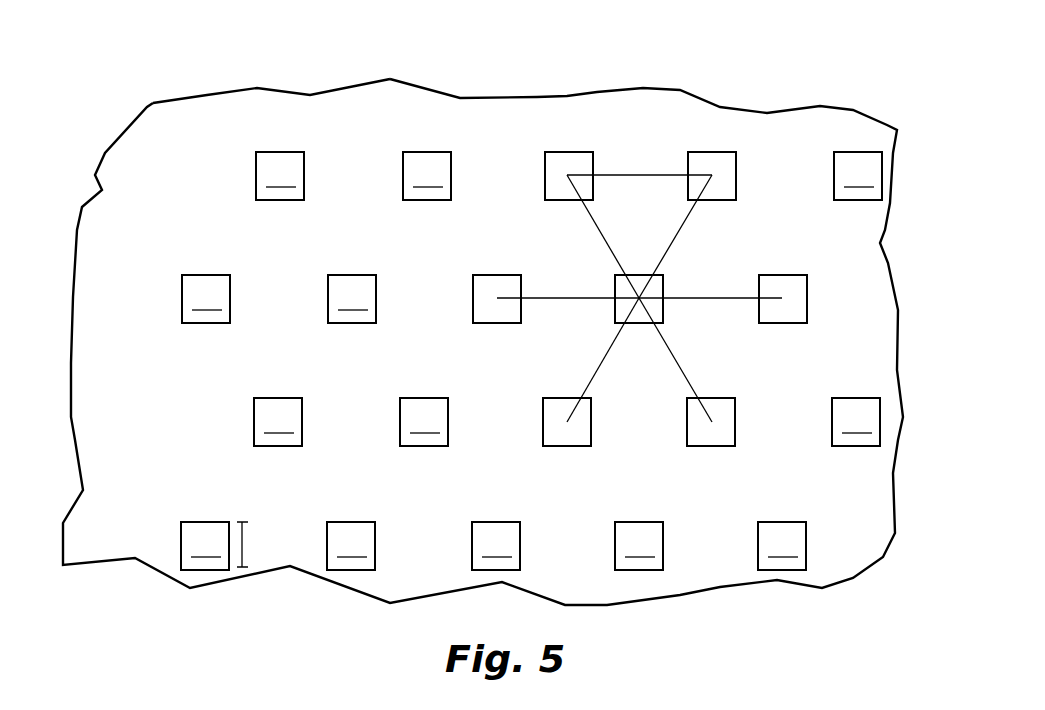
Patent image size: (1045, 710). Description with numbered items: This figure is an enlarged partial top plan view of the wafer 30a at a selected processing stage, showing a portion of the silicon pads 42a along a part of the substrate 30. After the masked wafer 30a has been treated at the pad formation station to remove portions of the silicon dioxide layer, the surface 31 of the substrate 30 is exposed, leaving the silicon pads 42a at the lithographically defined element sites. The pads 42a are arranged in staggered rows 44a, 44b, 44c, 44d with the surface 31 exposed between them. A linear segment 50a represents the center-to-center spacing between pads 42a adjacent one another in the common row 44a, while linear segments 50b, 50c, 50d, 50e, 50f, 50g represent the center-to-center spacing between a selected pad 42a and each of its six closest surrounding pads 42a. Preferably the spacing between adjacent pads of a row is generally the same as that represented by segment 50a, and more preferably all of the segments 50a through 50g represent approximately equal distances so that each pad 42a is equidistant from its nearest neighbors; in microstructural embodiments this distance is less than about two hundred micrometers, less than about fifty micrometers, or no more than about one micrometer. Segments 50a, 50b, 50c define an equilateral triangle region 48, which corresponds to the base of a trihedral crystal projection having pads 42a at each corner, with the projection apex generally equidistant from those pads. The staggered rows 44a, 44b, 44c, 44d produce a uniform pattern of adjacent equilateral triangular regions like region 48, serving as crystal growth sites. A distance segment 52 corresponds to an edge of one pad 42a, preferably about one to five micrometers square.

The substrate 30 is at (597, 91).
The wafer 30a is at (536, 97).
The surface 31 is at (285, 367).
The silicon pad 42a is at (544, 162).
The row 44a is at (246, 174).
The row 44b is at (173, 297).
The row 44c is at (245, 421).
The row 44d is at (172, 544).
The equilateral triangle region 48 is at (673, 188).
The linear segment 50a is at (634, 174).
The linear segment 50b is at (596, 224).
The linear segment 50c is at (686, 222).
The linear segment 50d is at (562, 300).
The linear segment 50e is at (600, 374).
The linear segment 50f is at (674, 357).
The linear segment 50g is at (704, 298).
The distance segment 52 is at (246, 542).